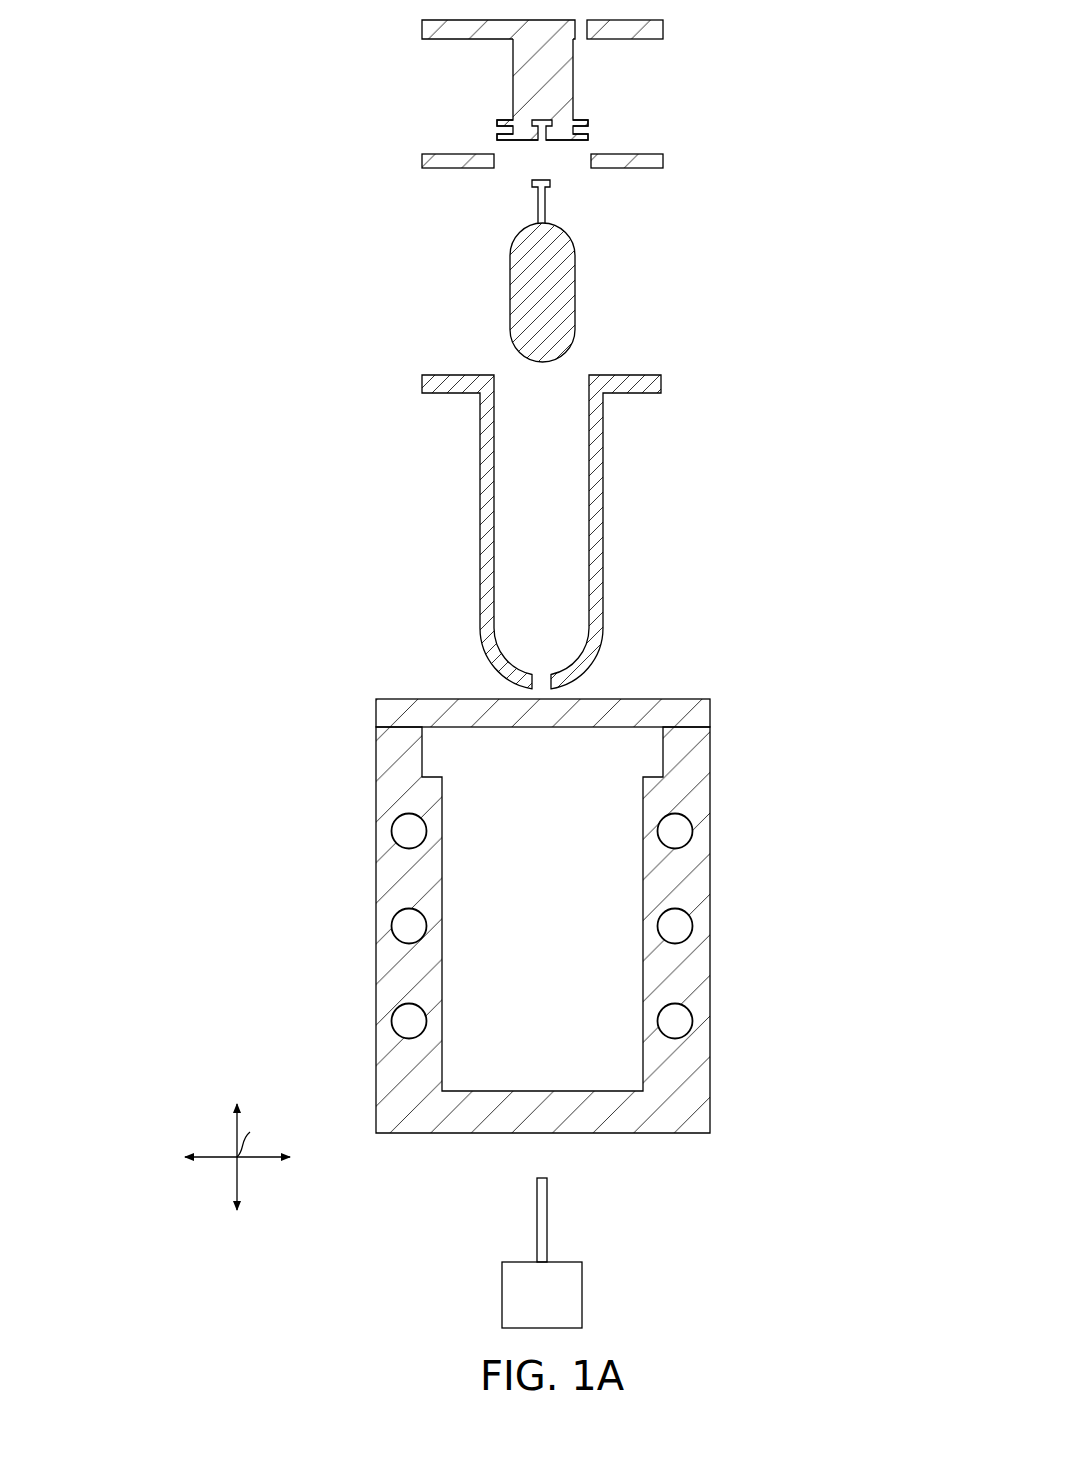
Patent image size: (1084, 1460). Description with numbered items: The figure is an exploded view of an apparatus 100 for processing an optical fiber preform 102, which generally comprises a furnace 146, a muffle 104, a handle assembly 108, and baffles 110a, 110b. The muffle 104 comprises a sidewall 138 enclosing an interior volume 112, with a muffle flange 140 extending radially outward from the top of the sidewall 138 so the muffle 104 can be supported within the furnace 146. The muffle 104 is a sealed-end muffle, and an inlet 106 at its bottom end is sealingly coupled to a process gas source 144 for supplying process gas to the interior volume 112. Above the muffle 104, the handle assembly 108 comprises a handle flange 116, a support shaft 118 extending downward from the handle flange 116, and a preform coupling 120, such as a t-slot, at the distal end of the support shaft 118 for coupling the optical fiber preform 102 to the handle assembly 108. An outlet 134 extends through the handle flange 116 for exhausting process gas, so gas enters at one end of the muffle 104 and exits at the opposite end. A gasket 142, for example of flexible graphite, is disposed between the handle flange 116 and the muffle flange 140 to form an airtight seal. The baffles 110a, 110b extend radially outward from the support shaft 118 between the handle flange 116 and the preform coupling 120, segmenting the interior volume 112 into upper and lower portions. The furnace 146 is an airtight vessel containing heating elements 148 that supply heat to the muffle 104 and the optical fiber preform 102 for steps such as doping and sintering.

The apparatus 100 is at (247, 96).
The optical fiber preform 102 is at (565, 295).
The muffle 104 is at (742, 372).
The inlet 106 is at (543, 668).
The handle assembly 108 is at (685, 25).
The baffle 110a is at (497, 137).
The baffle 110b is at (497, 120).
The interior volume 112 is at (557, 506).
The handle flange 116 is at (424, 32).
The support shaft 118 is at (566, 78).
The preform coupling 120 is at (540, 141).
The outlet 134 is at (578, 38).
The sidewall 138 is at (487, 494).
The muffle flange 140 is at (658, 382).
The gasket 142 is at (426, 162).
The process gas source 144 is at (582, 1294).
The furnace 146 is at (732, 713).
The heating elements 148 is at (392, 829).